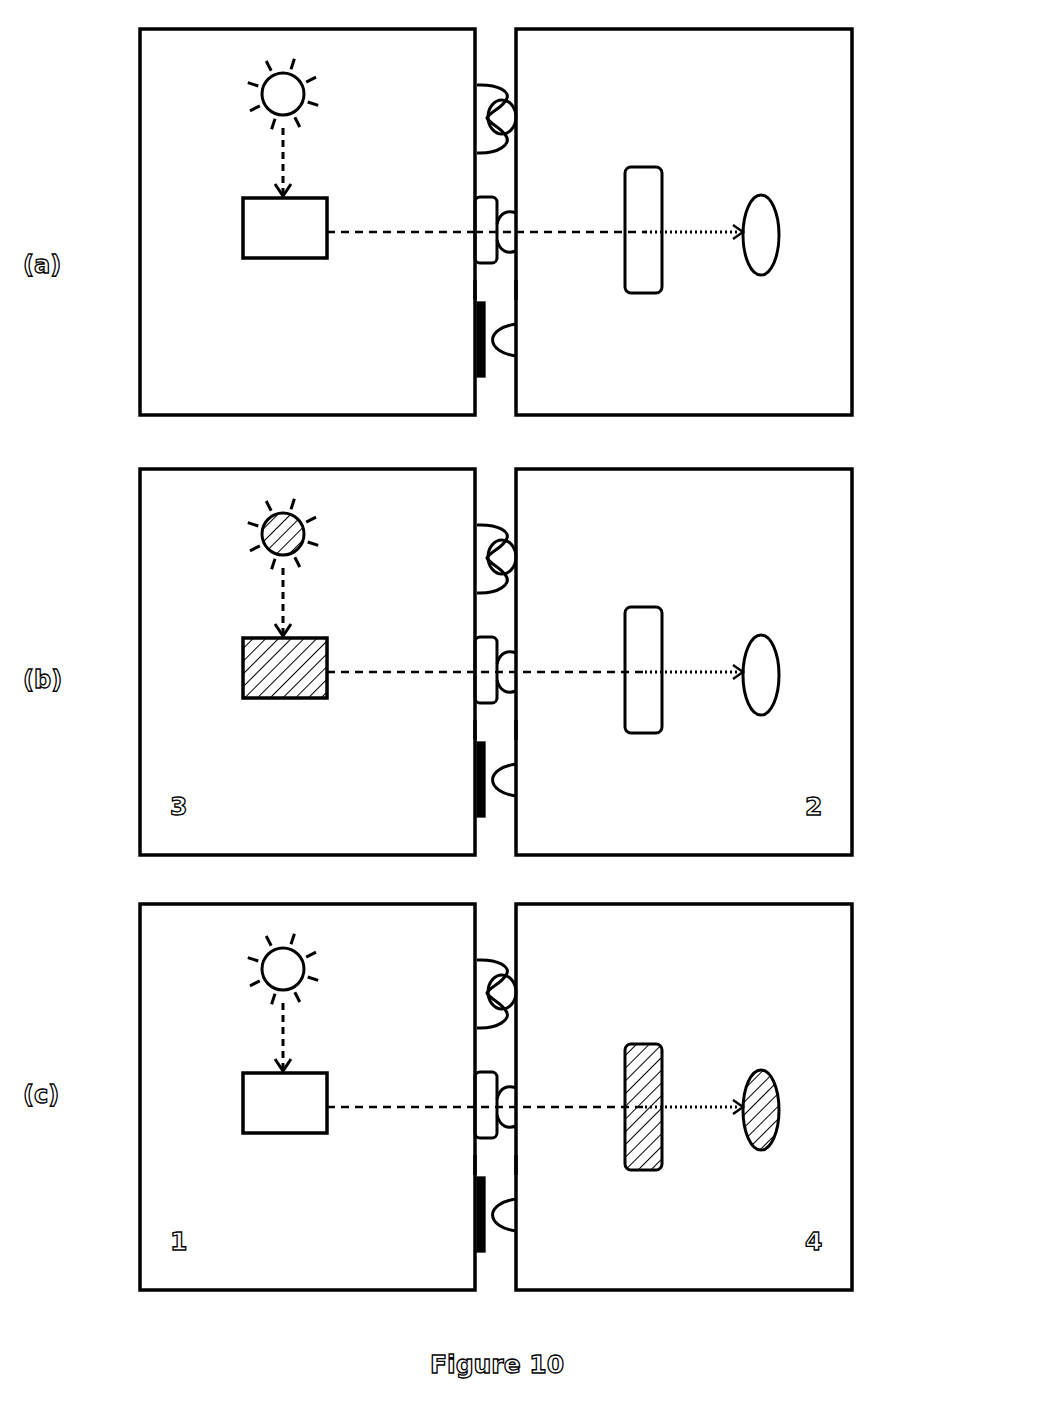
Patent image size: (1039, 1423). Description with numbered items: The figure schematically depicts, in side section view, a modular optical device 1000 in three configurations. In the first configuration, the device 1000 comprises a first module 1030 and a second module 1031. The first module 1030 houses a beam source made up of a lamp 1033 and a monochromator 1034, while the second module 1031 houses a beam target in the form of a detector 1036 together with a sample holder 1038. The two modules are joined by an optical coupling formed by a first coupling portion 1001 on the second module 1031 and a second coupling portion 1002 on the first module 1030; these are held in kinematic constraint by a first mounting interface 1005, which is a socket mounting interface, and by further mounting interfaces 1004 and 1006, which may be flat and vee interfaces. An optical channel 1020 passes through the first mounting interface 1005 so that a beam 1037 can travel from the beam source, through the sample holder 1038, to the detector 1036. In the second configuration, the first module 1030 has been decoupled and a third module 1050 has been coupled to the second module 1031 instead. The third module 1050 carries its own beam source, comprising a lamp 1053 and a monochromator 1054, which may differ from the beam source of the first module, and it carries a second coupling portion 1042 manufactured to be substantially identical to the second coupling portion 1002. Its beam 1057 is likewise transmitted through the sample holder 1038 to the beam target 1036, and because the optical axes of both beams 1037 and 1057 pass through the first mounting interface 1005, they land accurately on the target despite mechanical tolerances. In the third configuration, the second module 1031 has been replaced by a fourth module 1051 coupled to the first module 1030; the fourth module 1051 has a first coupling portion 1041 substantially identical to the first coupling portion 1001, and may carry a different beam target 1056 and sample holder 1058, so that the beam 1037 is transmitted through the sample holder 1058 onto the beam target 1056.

The modular optical device 1000 is at (101, 59).
The first module 1030 is at (165, 318).
The second module 1031 is at (812, 313).
The third module 1050 is at (183, 771).
The fourth module 1051 is at (810, 1203).
The lamp 1033 is at (282, 95).
The monochromator 1034 is at (278, 228).
The beam 1037 is at (412, 237).
The optical channel 1020 is at (482, 222).
The second coupling portion 1002 is at (470, 295).
The first coupling portion 1001 is at (522, 292).
The further mounting interface 1006 is at (498, 117).
The first mounting interface 1005 is at (505, 220).
The further mounting interface 1004 is at (488, 340).
The sample holder 1038 is at (647, 183).
The detector 1036 is at (758, 220).
The lamp 1053 is at (282, 535).
The monochromator 1054 is at (278, 668).
The beam 1057 is at (412, 677).
The second coupling portion 1042 is at (470, 735).
The first coupling portion 1041 is at (522, 1187).
The sample holder 1058 is at (652, 1047).
The beam target 1056 is at (762, 1077).